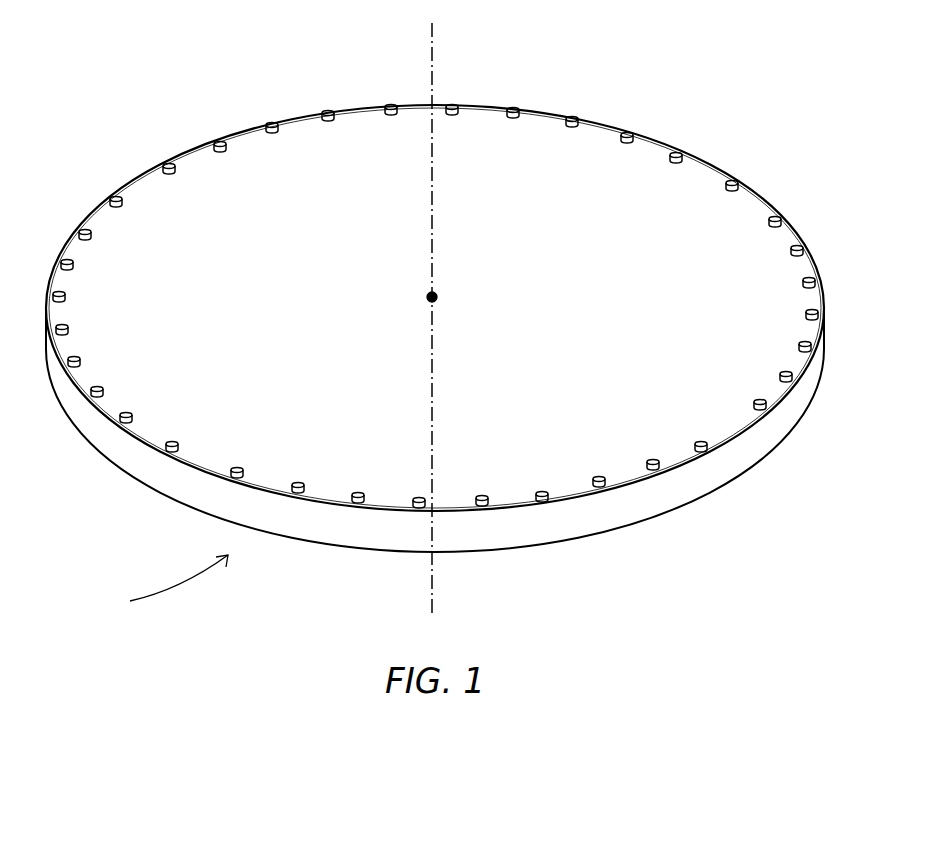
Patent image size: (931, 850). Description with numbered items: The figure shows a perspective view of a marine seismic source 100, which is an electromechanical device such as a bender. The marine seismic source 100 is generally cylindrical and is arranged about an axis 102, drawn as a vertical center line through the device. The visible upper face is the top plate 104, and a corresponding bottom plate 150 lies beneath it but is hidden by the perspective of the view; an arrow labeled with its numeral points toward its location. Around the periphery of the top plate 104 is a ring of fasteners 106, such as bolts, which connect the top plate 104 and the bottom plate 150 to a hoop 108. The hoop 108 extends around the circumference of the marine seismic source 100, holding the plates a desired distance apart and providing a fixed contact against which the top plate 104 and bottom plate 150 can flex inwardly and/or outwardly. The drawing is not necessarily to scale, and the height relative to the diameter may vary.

The marine seismic source 100 is at (435, 314).
The axis 102 is at (433, 47).
The top plate 104 is at (585, 160).
The fasteners 106 is at (542, 501).
The hoop 108 is at (698, 475).
The bottom plate 150 is at (155, 587).